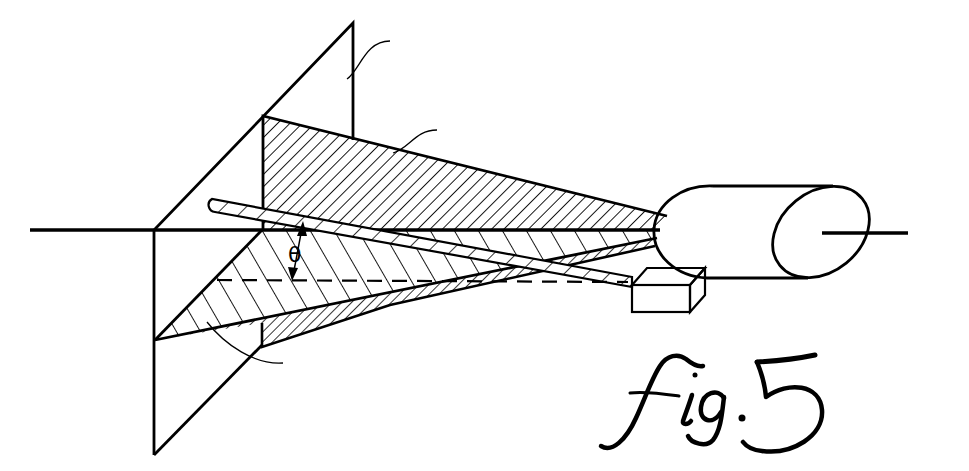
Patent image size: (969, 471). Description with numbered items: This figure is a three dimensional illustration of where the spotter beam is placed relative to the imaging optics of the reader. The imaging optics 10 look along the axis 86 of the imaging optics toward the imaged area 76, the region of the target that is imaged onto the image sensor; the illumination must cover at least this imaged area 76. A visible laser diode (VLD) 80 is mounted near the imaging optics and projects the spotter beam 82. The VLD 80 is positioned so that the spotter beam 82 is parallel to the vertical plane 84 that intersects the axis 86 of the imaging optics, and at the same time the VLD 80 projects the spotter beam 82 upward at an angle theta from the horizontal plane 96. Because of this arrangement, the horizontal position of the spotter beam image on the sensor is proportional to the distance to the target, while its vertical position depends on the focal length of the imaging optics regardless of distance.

The optics 10 is at (807, 186).
The imaged area 76 is at (193, 190).
The axis of the imaging optics 86 is at (148, 229).
The vertical plane 84 is at (565, 195).
The horizontal plane 96 is at (187, 328).
The spotter beam 82 is at (572, 272).
The visible laser diode (VLD) 80 is at (632, 290).